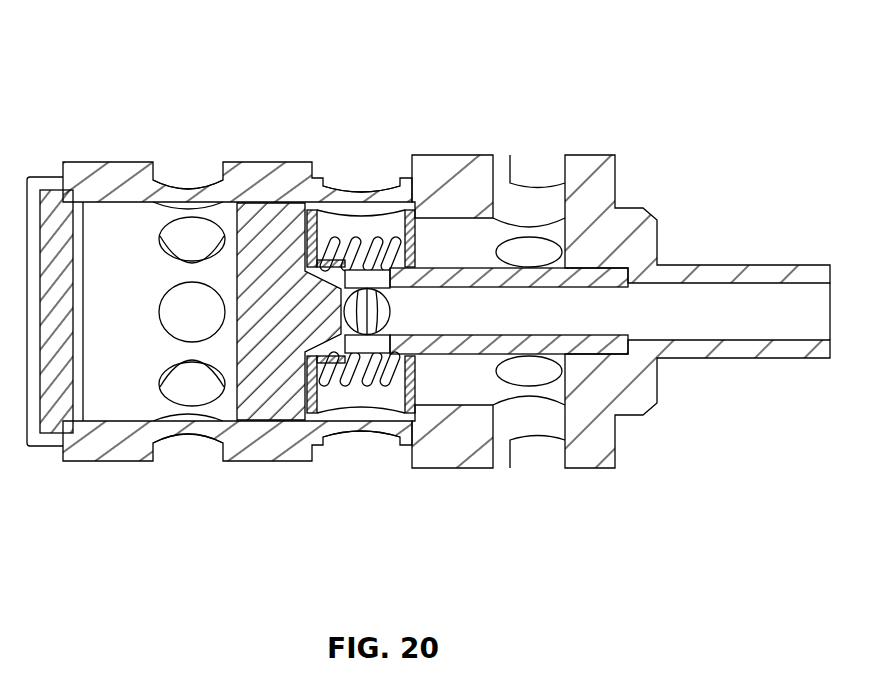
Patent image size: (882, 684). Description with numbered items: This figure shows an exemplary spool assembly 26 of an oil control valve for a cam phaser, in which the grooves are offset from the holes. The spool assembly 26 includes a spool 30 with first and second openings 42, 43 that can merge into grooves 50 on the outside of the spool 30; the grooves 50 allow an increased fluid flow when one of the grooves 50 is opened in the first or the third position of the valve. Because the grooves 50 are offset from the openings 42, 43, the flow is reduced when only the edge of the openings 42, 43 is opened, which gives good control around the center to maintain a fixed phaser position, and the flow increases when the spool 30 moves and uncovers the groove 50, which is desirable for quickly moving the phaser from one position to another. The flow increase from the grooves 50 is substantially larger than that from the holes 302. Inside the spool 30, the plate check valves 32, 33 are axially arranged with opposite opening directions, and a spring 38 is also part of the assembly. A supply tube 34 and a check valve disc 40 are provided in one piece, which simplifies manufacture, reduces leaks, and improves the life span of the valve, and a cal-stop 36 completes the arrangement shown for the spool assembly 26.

The spool assembly 26 is at (748, 150).
The spool 30 is at (93, 160).
The check valve 32 is at (307, 425).
The check valve 33 is at (417, 456).
The supply tube 34 is at (472, 268).
The cal-stop 36 is at (633, 217).
The spring 38 is at (428, 215).
The check valve disc 40 is at (275, 208).
The first opening 42 is at (524, 430).
The second opening 43 is at (188, 393).
The groove 50 is at (205, 168).
The holes 302 is at (358, 200).